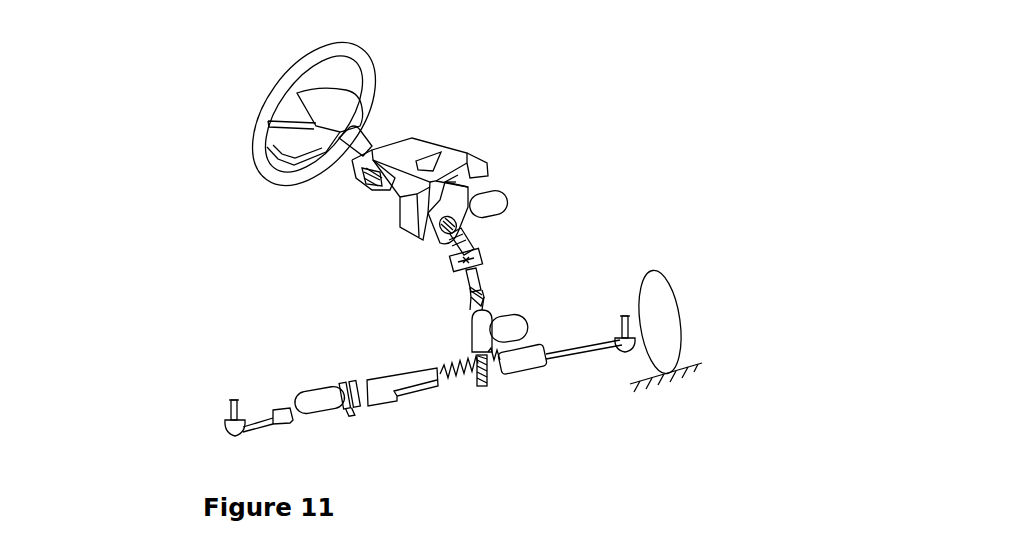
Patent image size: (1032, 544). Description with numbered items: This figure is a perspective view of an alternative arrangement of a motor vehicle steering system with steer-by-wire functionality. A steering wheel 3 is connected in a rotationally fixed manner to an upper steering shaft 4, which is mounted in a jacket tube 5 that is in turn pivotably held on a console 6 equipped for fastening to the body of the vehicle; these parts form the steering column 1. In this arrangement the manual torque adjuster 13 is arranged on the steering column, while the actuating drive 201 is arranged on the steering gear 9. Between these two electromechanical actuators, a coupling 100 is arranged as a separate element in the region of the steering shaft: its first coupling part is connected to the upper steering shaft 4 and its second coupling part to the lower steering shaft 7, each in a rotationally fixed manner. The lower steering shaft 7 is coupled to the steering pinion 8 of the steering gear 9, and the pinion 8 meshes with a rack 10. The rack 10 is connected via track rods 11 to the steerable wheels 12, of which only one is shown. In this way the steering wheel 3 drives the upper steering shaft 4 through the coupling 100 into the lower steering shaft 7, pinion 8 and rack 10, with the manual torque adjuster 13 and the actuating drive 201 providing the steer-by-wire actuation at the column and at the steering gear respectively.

The steering column 1 is at (456, 182).
The steering wheel 3 is at (360, 63).
The upper steering shaft 4 is at (358, 140).
The jacket tube 5 is at (390, 180).
The console 6 is at (410, 143).
The lower steering shaft 7 is at (482, 277).
The pinion 8 is at (482, 382).
The steering gear 9 is at (407, 338).
The rack 10 is at (460, 375).
The track rods 11 is at (575, 353).
The steerable wheels 12 is at (662, 308).
The manual torque adjuster 13 is at (488, 202).
The coupling 100 is at (452, 263).
The actuating drive 201 is at (507, 330).